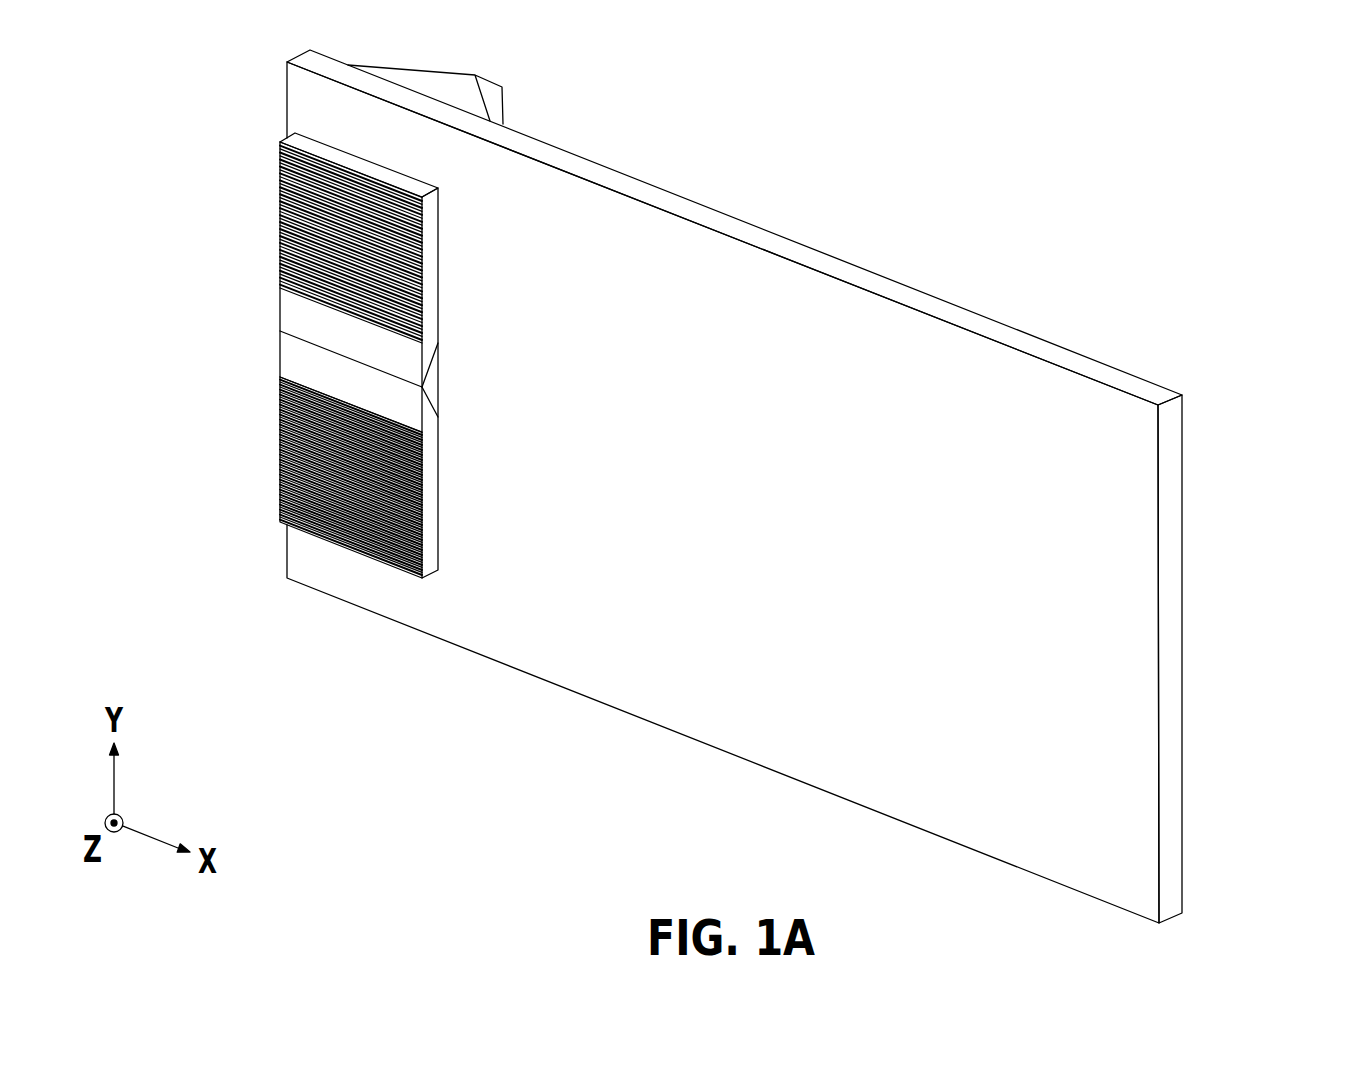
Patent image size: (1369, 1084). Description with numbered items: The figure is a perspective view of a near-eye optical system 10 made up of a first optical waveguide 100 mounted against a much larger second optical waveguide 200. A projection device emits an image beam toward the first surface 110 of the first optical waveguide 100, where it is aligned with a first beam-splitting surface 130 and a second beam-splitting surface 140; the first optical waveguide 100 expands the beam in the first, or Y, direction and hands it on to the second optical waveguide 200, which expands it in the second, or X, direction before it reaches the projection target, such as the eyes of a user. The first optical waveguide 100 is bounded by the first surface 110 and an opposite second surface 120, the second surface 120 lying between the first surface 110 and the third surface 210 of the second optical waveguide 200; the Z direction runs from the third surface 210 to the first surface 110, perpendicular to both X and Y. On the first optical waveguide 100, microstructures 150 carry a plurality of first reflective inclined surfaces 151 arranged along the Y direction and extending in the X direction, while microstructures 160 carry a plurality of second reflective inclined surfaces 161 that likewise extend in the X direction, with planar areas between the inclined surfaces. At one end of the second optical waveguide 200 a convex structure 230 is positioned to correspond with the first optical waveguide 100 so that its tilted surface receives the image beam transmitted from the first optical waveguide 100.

The near-eye optical system 10 is at (1070, 150).
The first optical waveguide 100 is at (312, 145).
The first surface 110 is at (305, 326).
The second surface 120 is at (442, 258).
The first beam-splitting surface 130 is at (440, 360).
The second beam-splitting surface 140 is at (440, 401).
The microstructures 150 is at (300, 295).
The first reflective inclined surfaces 151 is at (276, 280).
The microstructures 160 is at (281, 376).
The second reflective inclined surfaces 161 is at (275, 380).
The second optical waveguide 200 is at (1172, 485).
The third surface 210 is at (1080, 513).
The convex structure 230 is at (478, 92).